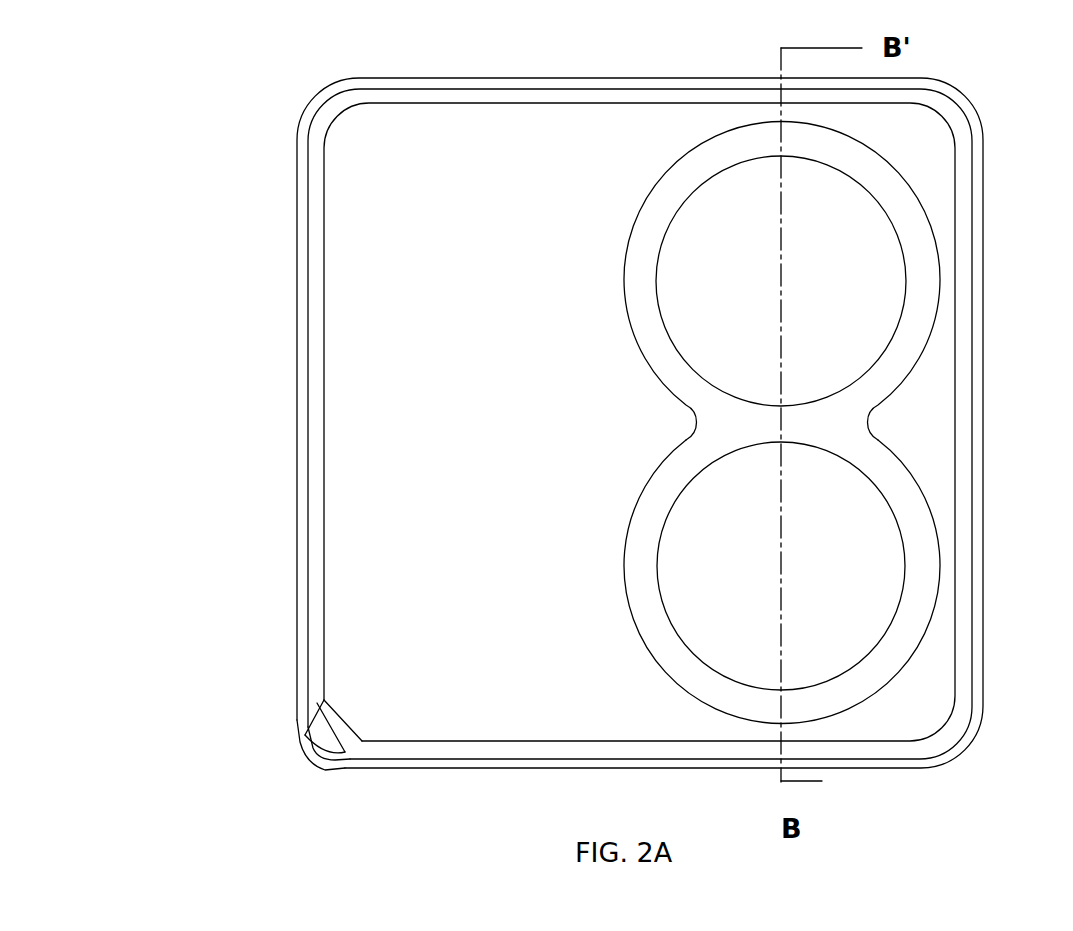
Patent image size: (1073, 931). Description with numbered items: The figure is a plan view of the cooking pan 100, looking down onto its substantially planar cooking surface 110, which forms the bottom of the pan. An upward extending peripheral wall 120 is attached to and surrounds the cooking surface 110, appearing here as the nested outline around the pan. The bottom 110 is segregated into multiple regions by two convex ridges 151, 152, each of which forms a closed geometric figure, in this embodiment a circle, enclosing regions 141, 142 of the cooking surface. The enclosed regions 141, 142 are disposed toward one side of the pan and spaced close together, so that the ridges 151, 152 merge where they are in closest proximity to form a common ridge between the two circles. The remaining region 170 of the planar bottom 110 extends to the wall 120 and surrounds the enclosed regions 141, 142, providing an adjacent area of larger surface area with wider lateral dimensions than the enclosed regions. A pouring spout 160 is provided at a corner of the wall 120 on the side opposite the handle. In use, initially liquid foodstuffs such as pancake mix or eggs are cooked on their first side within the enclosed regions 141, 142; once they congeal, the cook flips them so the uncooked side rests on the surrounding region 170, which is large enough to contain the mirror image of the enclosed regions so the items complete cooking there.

The cooking pan 100 is at (228, 213).
The cooking surface 110 is at (410, 638).
The peripheral wall 120 is at (290, 397).
The enclosed region 141 is at (747, 279).
The enclosed region 142 is at (733, 568).
The convex ridge 151 is at (913, 237).
The convex ridge 152 is at (925, 582).
The pouring spout 160 is at (300, 760).
The remaining region 170 is at (438, 459).